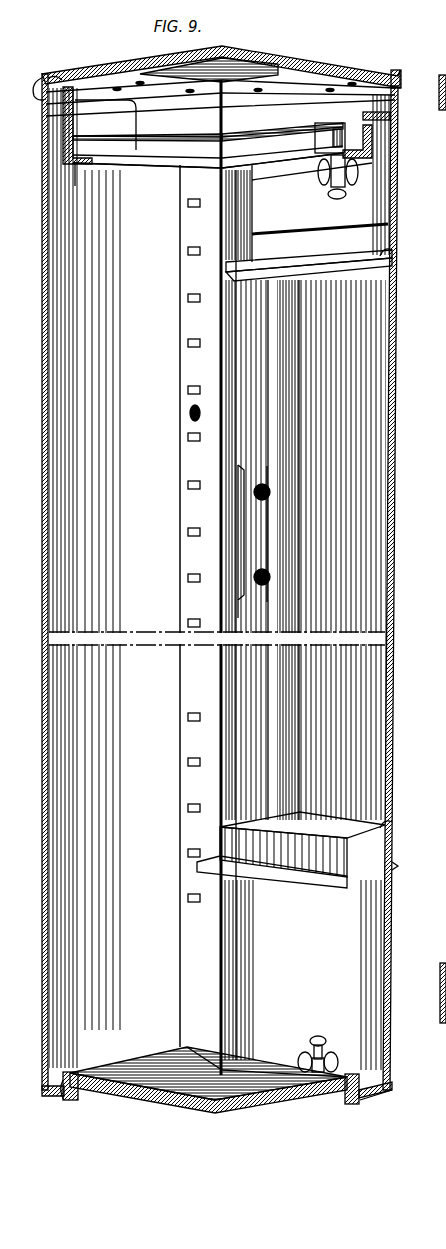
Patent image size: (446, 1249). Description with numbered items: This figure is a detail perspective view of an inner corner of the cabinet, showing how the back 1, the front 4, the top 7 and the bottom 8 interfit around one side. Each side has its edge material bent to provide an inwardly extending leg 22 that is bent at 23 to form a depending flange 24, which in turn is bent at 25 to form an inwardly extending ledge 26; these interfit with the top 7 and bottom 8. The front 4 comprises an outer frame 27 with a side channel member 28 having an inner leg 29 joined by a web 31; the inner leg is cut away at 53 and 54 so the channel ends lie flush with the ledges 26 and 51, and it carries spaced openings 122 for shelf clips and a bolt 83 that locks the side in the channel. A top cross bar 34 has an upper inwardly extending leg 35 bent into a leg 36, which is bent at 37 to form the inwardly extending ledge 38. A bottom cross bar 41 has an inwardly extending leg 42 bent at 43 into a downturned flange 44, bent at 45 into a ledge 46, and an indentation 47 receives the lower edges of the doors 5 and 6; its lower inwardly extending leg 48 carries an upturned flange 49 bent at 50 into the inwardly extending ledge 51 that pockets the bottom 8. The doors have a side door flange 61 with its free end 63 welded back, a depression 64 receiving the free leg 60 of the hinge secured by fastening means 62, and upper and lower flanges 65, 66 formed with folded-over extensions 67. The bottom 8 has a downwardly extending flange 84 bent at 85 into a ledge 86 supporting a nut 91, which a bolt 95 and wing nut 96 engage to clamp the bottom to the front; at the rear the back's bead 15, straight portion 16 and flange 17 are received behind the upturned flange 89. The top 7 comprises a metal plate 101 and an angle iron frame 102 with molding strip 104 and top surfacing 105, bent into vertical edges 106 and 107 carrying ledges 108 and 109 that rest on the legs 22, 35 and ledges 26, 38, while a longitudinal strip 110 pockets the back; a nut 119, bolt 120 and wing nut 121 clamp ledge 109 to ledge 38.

The back 1 is at (445, 474).
The front 4 is at (394, 230).
The swinging door 5 is at (378, 385).
The swinging door 6 is at (50, 261).
The top 7 is at (328, 70).
The bottom 8 is at (170, 1102).
The out-turned bead 15 is at (440, 1016).
The straight portion 16 is at (440, 981).
The flange 17 is at (442, 965).
The inwardly extending leg 22 is at (70, 128).
The bend 23 is at (86, 150).
The depending flange 24 is at (58, 160).
The bend 25 is at (80, 1075).
The inwardly extending ledge 26 is at (110, 162).
The outer frame 27 is at (390, 888).
The side channel member 28 is at (188, 459).
The inner leg 29 is at (188, 366).
The web 31 is at (228, 219).
The top cross bar 34 is at (393, 196).
The upper inwardly extending leg 35 is at (374, 130).
The leg 36 is at (348, 140).
The bend 37 is at (366, 140).
The inwardly extending ledge 38 is at (355, 150).
The bottom cross bar 41 is at (385, 973).
The inwardly extending leg 42 is at (365, 832).
The bend 43 is at (338, 840).
The downturned flange 44 is at (325, 878).
The bend 45 is at (345, 880).
The inwardly extending ledge 46 is at (337, 880).
The indentation 47 is at (400, 866).
The lower inwardly extending leg 48 is at (392, 1082).
The upturned flange 49 is at (375, 1094).
The bend 50 is at (340, 1074).
The inwardly extending ledge 51 is at (225, 1060).
The cut-away 53 is at (196, 170).
The cut-away 54 is at (196, 1045).
The free leg 60 is at (236, 539).
The side door flange 61 is at (250, 661).
The fastening means 62 is at (253, 492).
The free end 63 is at (278, 706).
The depression 64 is at (236, 470).
The upper flange 65 is at (392, 262).
The lower flange 66 is at (310, 825).
The folded-over extension 67 is at (396, 248).
The bolt 83 is at (188, 413).
The downwardly extending flange 84 is at (74, 1100).
The bend 85 is at (348, 1100).
The inwardly extending ledge 86 is at (90, 1100).
The upturned flange 89 is at (440, 999).
The nut 91 is at (305, 1092).
The bolt 95 is at (312, 1038).
The wing nut 96 is at (300, 1055).
The metal plate 101 is at (107, 68).
The angle iron frame 102 is at (243, 80).
The molding strip 104 is at (398, 72).
The top surfacing 105 is at (282, 66).
The vertical edge 106 is at (42, 78).
The vertical edge 107 is at (139, 162).
The ledge 108 is at (72, 72).
The ledge 109 is at (262, 152).
The longitudinal strip 110 is at (362, 226).
The nut 119 is at (330, 158).
The bolt 120 is at (326, 198).
The wing nut 121 is at (350, 165).
The spaced opening 122 is at (186, 344).